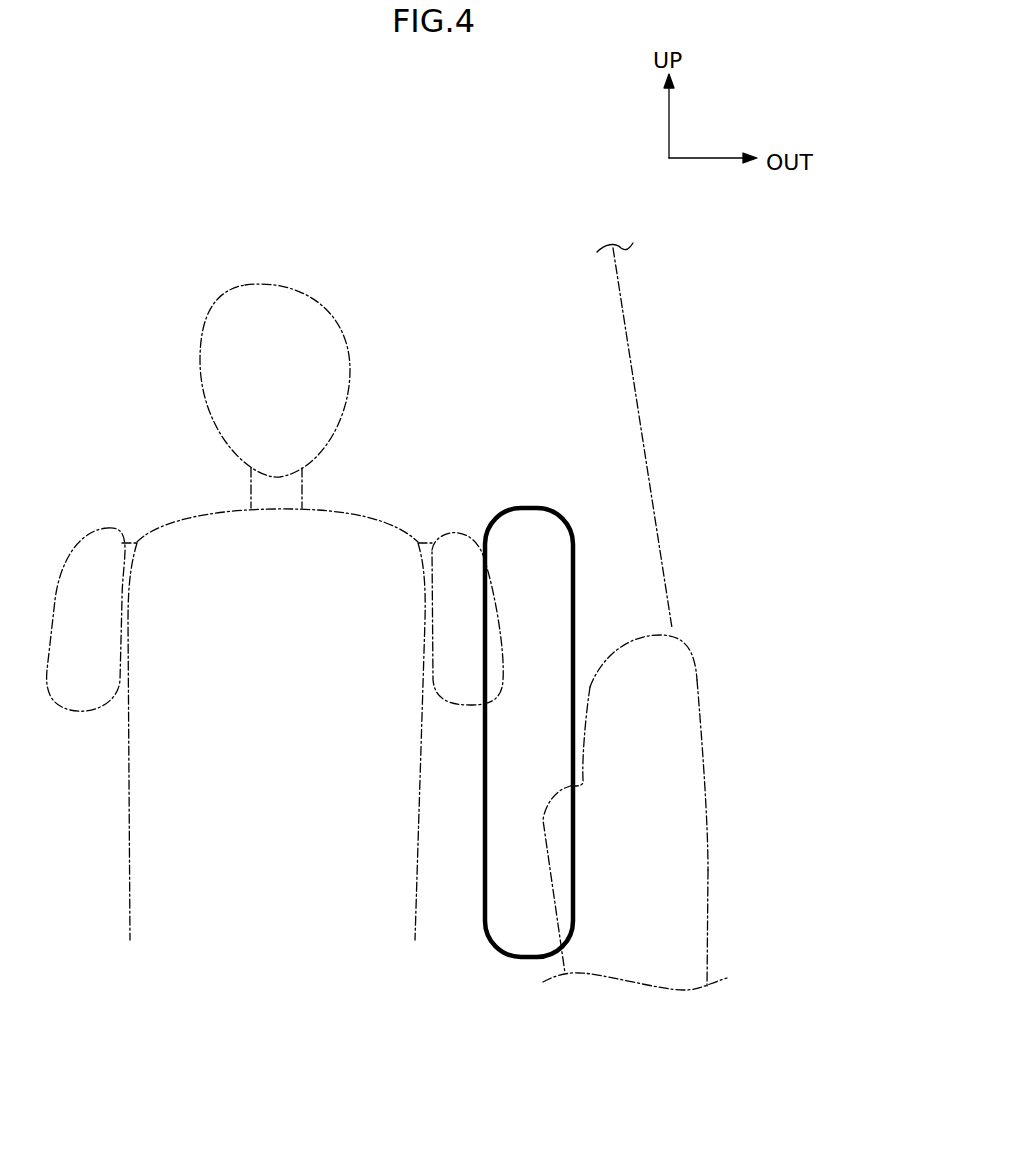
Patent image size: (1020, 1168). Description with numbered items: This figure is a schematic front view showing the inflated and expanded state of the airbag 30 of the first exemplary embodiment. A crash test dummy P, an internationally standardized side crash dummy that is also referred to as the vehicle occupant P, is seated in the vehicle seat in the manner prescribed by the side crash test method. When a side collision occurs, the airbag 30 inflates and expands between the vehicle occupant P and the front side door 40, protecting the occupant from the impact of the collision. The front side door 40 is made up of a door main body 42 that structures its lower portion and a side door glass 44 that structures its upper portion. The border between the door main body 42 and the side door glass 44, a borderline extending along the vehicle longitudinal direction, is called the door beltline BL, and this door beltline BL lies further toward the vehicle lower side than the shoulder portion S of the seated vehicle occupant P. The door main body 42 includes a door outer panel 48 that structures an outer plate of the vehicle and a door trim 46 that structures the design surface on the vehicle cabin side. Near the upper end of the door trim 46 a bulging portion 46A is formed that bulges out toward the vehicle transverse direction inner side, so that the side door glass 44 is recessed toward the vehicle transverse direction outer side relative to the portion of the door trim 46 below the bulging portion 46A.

The crash test dummy P is at (275, 561).
The shoulder portion S is at (461, 550).
The airbag 30 is at (526, 508).
The front side door 40 is at (640, 623).
The side door glass 44 is at (636, 378).
The door beltline BL is at (672, 628).
The door trim 46 is at (640, 778).
The bulging portion 46A is at (640, 628).
The door outer panel 48 is at (702, 745).
The door main body 42 is at (708, 857).